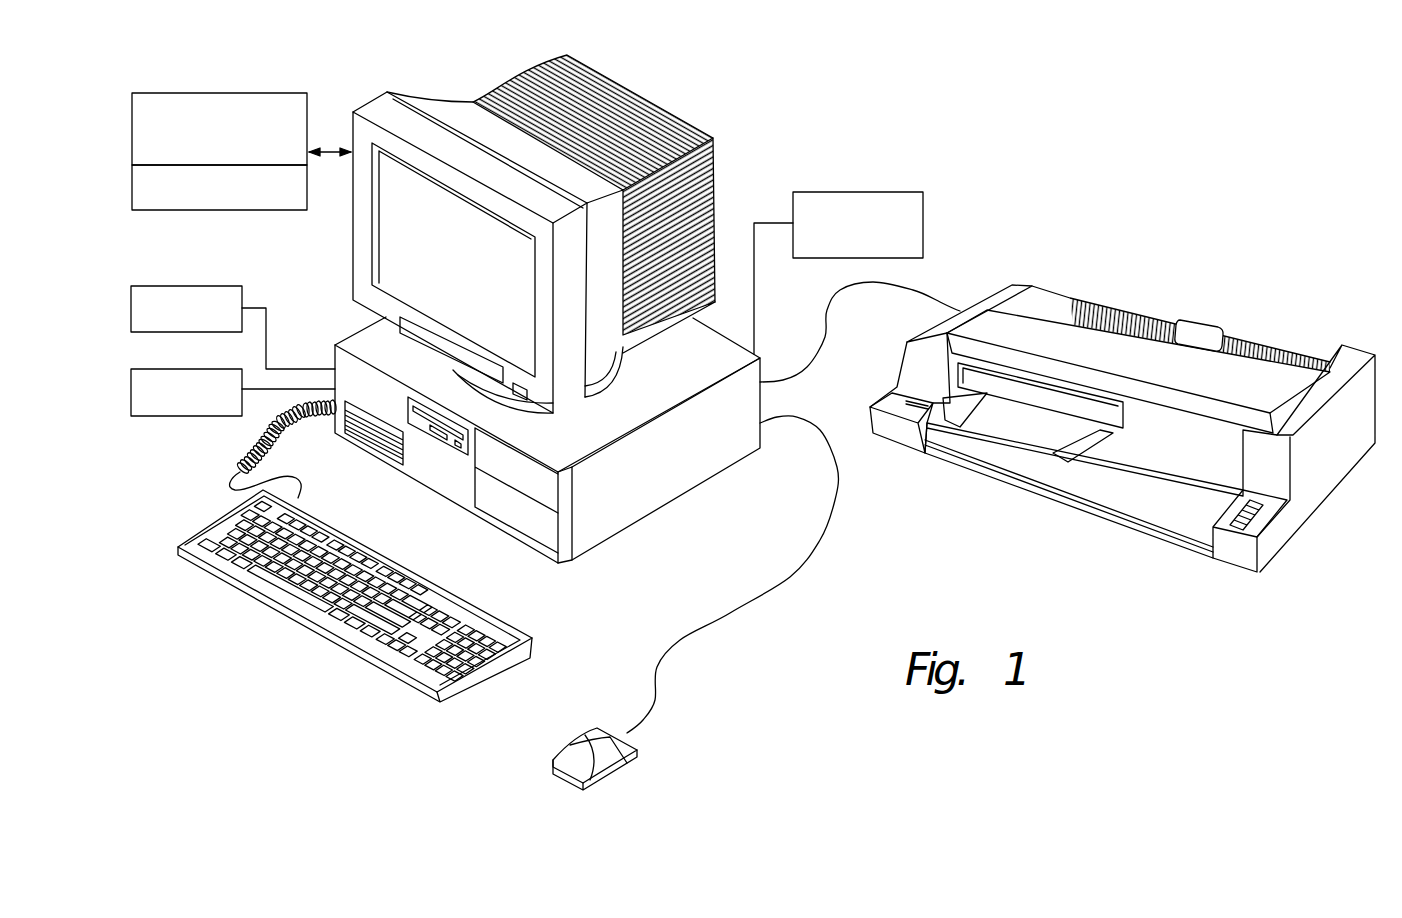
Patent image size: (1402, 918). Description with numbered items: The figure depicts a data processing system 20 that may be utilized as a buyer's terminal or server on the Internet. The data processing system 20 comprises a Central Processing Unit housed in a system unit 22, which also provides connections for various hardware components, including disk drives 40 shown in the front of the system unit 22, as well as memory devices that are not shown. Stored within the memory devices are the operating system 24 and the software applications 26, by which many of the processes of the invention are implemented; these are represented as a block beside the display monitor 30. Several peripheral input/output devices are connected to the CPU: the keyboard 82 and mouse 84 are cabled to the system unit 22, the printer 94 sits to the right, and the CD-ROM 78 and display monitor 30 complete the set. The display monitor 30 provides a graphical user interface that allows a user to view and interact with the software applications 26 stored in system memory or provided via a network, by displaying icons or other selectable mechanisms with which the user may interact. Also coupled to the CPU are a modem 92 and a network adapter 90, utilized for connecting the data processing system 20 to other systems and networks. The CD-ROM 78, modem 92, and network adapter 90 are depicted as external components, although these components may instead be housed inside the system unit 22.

The data processing system 20 is at (910, 100).
The system unit 22 is at (547, 457).
The operating system 24 is at (147, 210).
The software applications 26 is at (154, 69).
The display monitor 30 is at (472, 271).
The disk drives 40 is at (435, 430).
The CD-ROM 78 is at (158, 416).
The keyboard 82 is at (325, 640).
The mouse 84 is at (630, 758).
The network adapter 90 is at (923, 204).
The modem 92 is at (158, 332).
The printer 94 is at (1074, 268).